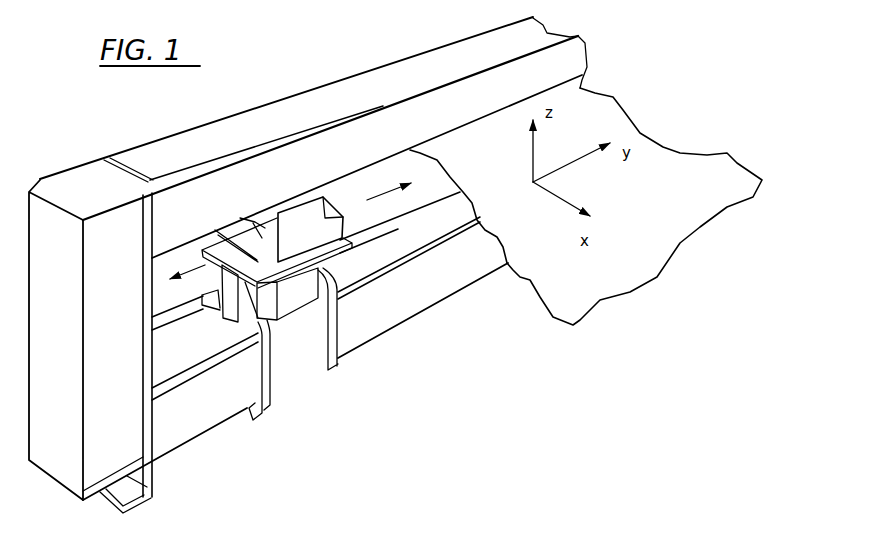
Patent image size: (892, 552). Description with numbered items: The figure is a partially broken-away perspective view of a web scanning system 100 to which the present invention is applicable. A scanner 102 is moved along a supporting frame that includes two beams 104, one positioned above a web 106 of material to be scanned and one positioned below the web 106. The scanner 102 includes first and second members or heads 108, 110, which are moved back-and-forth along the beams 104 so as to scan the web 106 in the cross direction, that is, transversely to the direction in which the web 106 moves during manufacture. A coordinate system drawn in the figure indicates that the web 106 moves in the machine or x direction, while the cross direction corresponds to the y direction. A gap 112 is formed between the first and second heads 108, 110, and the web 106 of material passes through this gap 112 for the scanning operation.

The web scanning system 100 is at (362, 33).
The scanner 102 is at (362, 258).
The beams 104 is at (155, 147).
The web 106 is at (705, 170).
The first member or head 108 is at (292, 303).
The second member or head 110 is at (300, 212).
The gap 112 is at (350, 217).